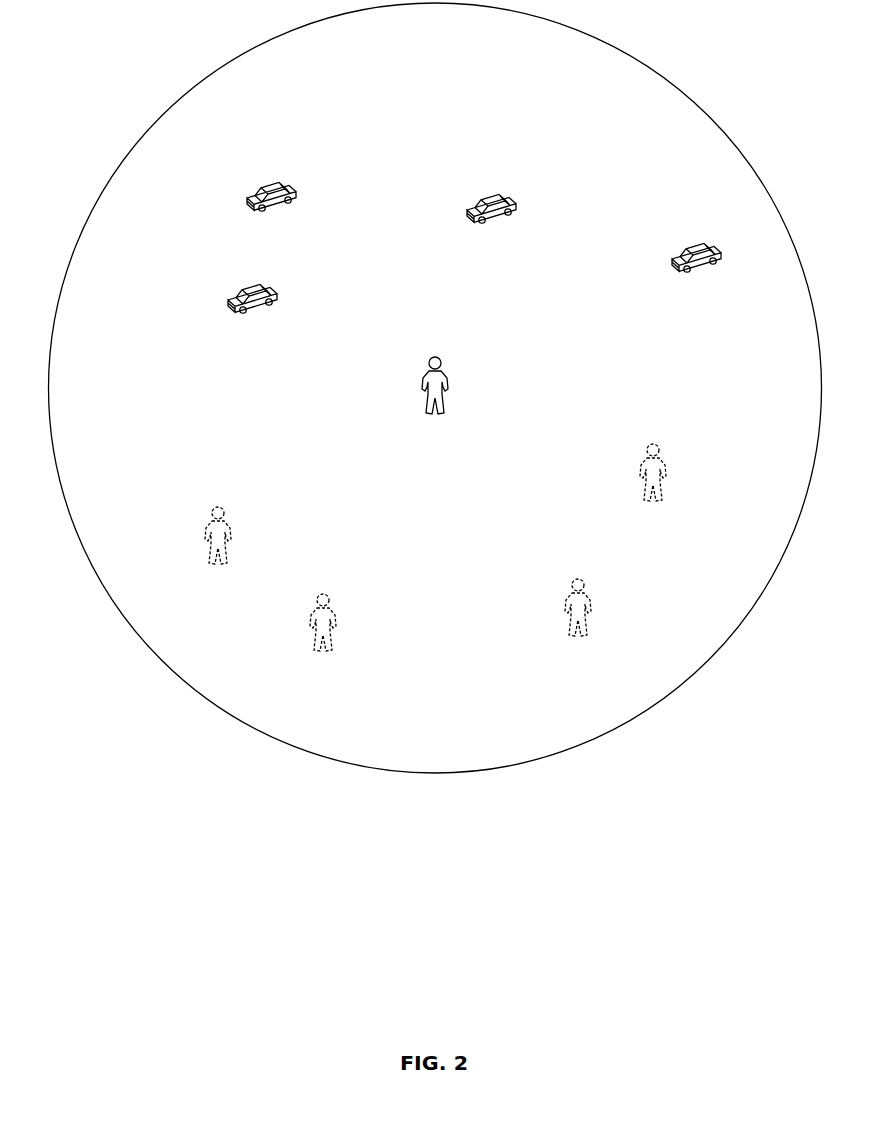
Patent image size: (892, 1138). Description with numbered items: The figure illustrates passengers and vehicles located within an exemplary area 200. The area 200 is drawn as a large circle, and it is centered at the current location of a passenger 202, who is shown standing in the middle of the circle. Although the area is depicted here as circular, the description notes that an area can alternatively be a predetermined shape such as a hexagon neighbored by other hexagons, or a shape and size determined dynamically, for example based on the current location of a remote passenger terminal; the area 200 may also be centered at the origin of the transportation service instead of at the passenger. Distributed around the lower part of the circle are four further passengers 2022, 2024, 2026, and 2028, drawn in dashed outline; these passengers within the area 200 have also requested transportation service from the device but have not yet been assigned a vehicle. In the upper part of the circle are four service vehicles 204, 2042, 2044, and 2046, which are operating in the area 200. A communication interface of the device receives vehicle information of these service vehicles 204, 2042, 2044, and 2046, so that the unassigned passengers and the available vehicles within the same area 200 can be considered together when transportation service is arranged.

The area 200 is at (454, 870).
The passenger 202 is at (436, 403).
The service vehicle 204 is at (252, 314).
The service vehicle 2042 is at (271, 212).
The service vehicle 2044 is at (491, 224).
The service vehicle 2046 is at (696, 273).
The passenger 2022 is at (218, 553).
The passenger 2024 is at (321, 642).
The passenger 2026 is at (578, 627).
The passenger 2028 is at (653, 493).